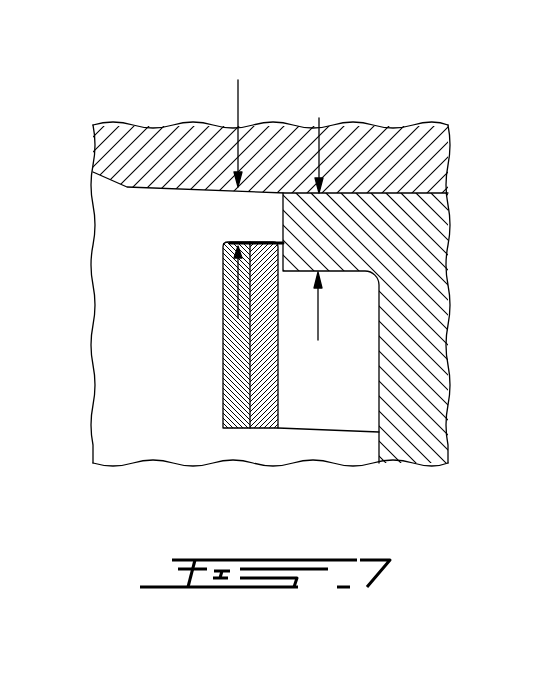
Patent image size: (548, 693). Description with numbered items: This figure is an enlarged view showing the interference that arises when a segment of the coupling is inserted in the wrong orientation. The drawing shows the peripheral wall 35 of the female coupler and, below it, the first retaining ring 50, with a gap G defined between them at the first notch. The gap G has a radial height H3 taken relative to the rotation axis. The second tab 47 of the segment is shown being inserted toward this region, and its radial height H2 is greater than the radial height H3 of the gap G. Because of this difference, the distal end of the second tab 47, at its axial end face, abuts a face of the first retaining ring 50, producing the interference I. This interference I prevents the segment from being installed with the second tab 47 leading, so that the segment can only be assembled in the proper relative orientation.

The peripheral wall 35 is at (150, 156).
The second tab 47 is at (340, 226).
The first retaining ring 50 is at (238, 347).
The gap G is at (216, 215).
The interference I is at (246, 251).
The radial height of the second tab H2 is at (319, 145).
The radial height of the gap H3 is at (238, 103).